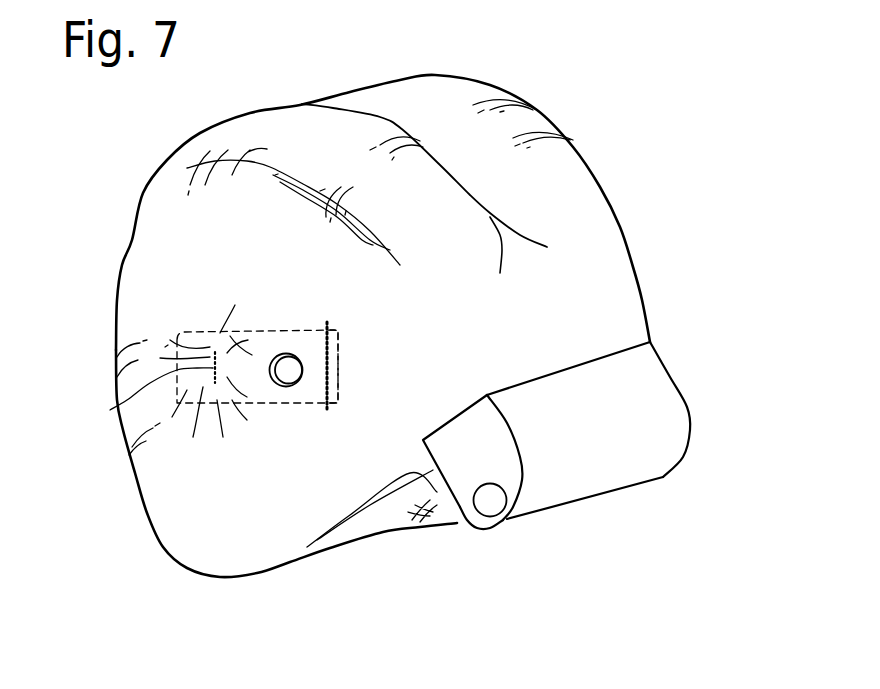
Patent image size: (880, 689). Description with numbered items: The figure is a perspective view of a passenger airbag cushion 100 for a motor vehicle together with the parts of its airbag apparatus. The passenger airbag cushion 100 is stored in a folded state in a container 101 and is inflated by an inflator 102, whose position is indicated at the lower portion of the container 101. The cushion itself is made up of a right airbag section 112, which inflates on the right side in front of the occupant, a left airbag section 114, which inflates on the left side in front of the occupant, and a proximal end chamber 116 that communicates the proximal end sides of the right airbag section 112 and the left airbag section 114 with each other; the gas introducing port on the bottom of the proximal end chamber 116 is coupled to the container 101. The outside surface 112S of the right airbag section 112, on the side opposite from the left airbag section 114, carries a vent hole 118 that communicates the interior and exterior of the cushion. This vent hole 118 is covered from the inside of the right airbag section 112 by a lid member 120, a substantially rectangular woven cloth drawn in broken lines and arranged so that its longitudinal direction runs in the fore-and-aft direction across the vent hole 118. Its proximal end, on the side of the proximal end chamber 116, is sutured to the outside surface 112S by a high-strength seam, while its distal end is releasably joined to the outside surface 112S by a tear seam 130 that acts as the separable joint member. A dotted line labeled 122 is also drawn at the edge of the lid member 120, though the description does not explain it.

The passenger airbag cushion 100 is at (612, 116).
The container 101 is at (592, 478).
The inflator 102 is at (488, 503).
The right airbag section 112 is at (110, 212).
The outside surface of right airbag section 112S is at (142, 311).
The left airbag section 114 is at (499, 61).
The proximal end chamber 116 is at (590, 309).
The vent hole 118 is at (268, 386).
The lid member 120 is at (208, 330).
The sewn seam 122 is at (338, 343).
The tear seam 130 is at (110, 410).